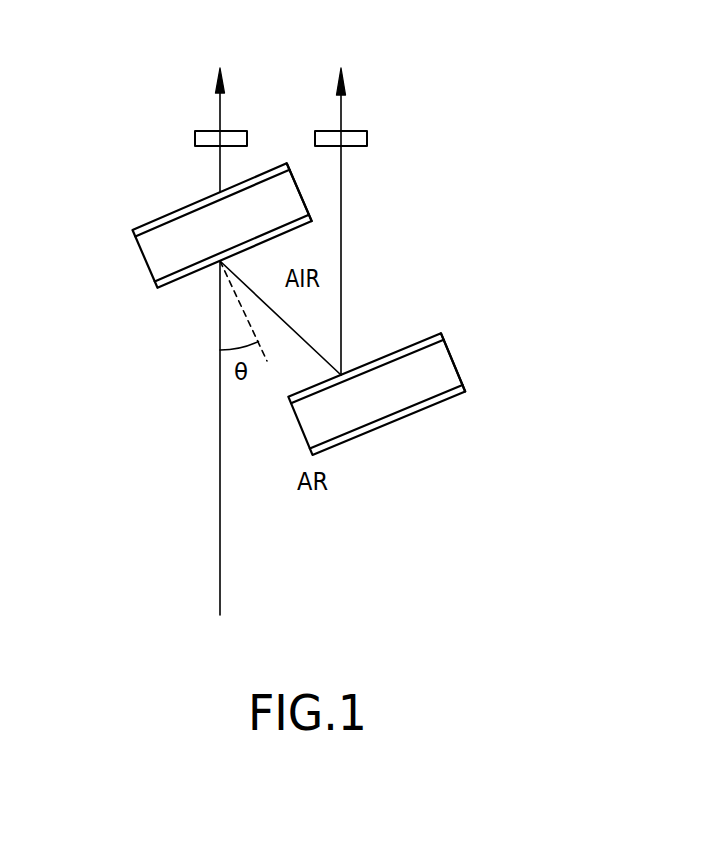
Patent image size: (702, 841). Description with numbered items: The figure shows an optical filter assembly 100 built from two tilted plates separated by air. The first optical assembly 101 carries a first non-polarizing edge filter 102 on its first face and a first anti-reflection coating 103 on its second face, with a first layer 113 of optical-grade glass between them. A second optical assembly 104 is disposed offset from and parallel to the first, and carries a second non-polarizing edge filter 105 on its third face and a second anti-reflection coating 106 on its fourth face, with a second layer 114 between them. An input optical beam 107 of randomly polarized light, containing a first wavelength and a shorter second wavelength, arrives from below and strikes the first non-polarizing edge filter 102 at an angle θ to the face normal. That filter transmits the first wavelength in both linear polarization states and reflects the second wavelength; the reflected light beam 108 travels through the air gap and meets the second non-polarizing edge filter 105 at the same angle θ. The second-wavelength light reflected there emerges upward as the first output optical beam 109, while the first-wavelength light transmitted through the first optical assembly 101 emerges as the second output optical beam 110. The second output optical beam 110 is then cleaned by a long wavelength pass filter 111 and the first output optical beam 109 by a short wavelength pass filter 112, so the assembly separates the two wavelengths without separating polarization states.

The optical filter assembly 100 is at (492, 28).
The first optical assembly 101 is at (177, 251).
The first non-polarizing edge filter 102 is at (308, 219).
The first anti-reflection coating 103 is at (146, 222).
The second optical assembly 104 is at (429, 357).
The second non-polarizing edge filter 105 is at (432, 333).
The second anti-reflection coating 106 is at (462, 397).
The input optical beam 107 is at (220, 533).
The light beam 108 is at (300, 336).
The first output optical beam 109 is at (342, 178).
The second output optical beam 110 is at (205, 130).
The long wavelength pass filter 111 is at (220, 170).
The short wavelength pass filter 112 is at (357, 129).
The first layer 113 is at (153, 275).
The second layer 114 is at (449, 346).